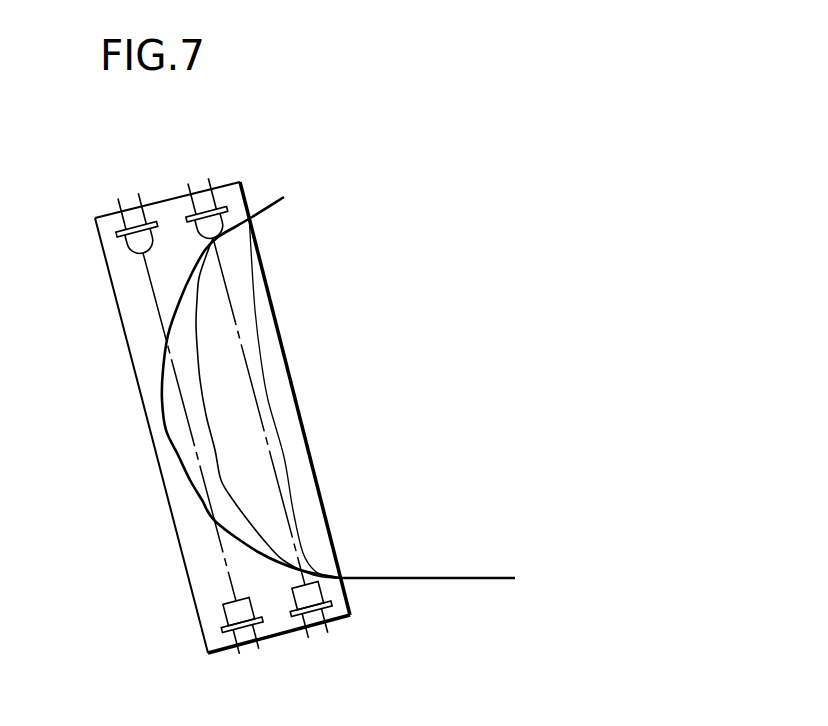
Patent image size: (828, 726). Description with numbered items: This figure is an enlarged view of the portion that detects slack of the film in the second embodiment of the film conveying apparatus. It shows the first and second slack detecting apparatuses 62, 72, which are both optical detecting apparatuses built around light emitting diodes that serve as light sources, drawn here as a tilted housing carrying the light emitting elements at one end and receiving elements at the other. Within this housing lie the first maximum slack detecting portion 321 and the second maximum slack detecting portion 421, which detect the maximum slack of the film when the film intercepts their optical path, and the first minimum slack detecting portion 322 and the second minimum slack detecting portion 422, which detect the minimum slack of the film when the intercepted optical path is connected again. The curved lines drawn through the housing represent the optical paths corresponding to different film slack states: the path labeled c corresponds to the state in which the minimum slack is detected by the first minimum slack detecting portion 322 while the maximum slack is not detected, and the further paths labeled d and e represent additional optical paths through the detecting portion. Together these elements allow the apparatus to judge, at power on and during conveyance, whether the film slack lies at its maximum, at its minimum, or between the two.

The first slack detecting apparatus 62 is at (303, 417).
The second slack detecting apparatus 72 is at (152, 527).
The first maximum slack detecting portion 321 is at (135, 396).
The second maximum slack detecting portion 421 is at (148, 315).
The first minimum slack detecting portion 322 is at (248, 357).
The second minimum slack detecting portion 422 is at (249, 215).
The state c is at (160, 412).
The light path d is at (203, 417).
The light path e is at (282, 457).